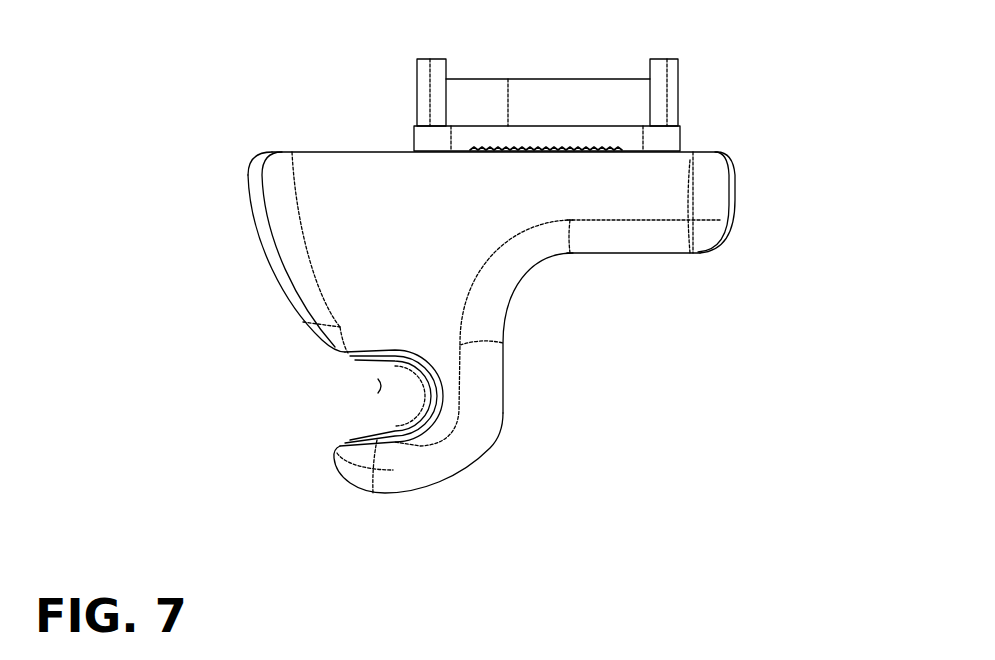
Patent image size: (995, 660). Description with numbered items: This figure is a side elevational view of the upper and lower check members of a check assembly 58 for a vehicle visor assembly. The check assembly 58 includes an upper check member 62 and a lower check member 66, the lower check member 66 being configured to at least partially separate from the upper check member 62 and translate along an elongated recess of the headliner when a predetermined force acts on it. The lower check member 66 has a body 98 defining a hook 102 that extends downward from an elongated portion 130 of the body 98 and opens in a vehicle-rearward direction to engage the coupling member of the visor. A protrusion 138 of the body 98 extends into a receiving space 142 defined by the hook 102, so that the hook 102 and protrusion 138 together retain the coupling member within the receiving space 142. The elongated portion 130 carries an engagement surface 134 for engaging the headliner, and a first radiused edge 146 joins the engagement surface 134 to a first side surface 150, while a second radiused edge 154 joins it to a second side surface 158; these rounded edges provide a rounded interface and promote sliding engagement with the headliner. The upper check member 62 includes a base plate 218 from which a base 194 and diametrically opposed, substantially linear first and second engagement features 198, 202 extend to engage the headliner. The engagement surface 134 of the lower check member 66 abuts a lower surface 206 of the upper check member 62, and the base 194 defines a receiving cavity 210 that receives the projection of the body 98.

The check assembly 58 is at (740, 138).
The upper check member 62 is at (678, 102).
The lower check member 66 is at (523, 273).
The body 98 is at (363, 265).
The hook 102 is at (383, 482).
The elongated portion 130 is at (643, 197).
The engagement surface 134 is at (337, 150).
The protrusion 138 is at (348, 355).
The receiving space 142 is at (357, 387).
The first radiused edge 146 is at (252, 160).
The first side surface 150 is at (265, 227).
The second radiused edge 154 is at (723, 157).
The second side surface 158 is at (715, 205).
The base 194 is at (595, 78).
The first engagement feature 198 is at (423, 90).
The second engagement feature 202 is at (668, 68).
The lower surface 206 is at (573, 152).
The receiving cavity 210 is at (538, 104).
The base plate 218 is at (457, 152).